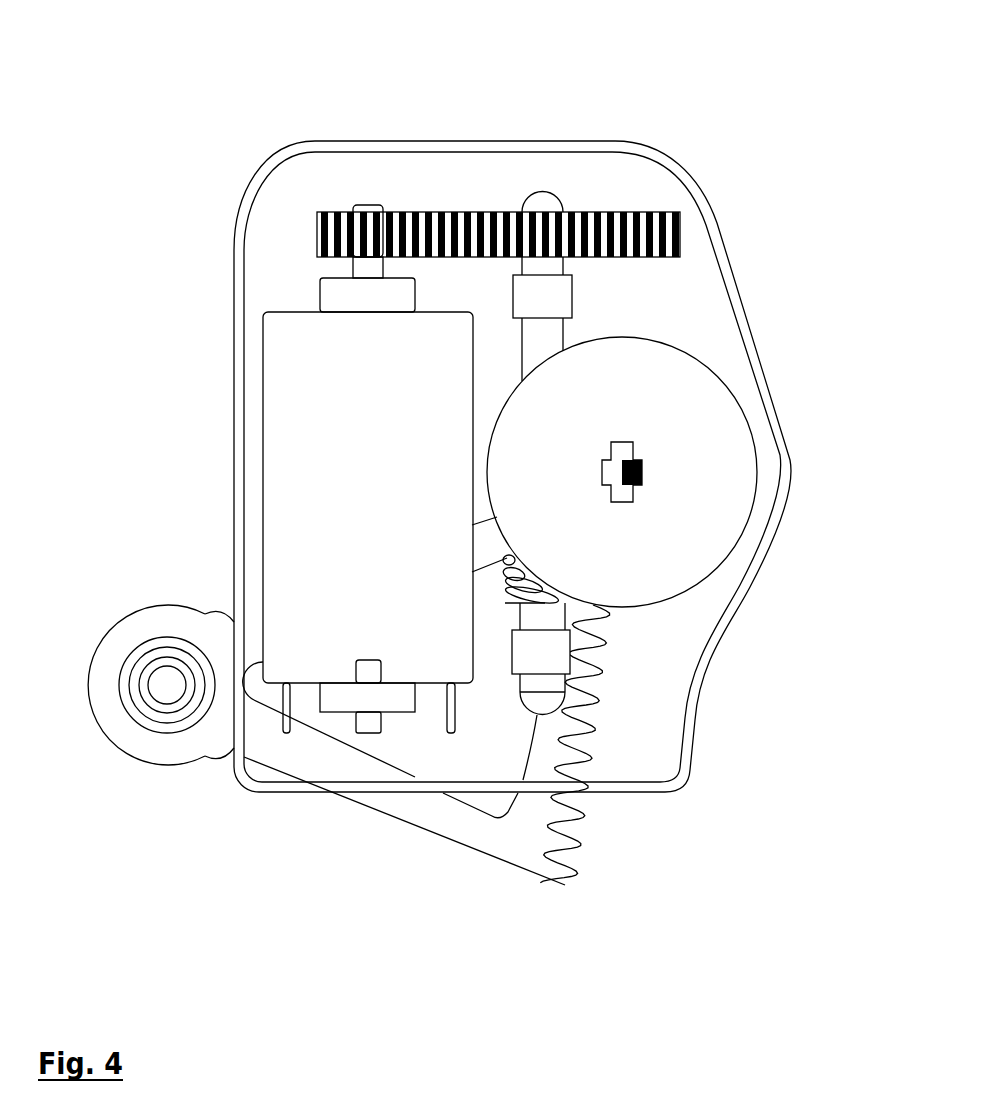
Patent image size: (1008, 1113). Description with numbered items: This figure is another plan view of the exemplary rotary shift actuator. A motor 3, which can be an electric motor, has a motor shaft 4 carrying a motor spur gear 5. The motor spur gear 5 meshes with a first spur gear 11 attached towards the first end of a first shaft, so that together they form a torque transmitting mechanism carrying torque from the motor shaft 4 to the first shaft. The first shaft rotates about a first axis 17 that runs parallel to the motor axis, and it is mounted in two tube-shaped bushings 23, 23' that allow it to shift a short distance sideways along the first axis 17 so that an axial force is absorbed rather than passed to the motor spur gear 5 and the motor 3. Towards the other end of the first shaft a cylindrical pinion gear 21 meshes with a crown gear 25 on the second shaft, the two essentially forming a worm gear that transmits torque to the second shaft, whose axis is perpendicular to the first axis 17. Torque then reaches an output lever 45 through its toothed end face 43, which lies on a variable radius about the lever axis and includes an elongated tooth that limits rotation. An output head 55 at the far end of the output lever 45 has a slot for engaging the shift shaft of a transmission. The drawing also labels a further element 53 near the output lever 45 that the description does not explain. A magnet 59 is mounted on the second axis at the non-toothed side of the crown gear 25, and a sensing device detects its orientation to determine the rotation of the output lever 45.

The motor 3 is at (375, 454).
The motor shaft 4 is at (368, 268).
The motor spur gear 5 is at (502, 151).
The first spur gear 11 is at (622, 210).
The first axis 17 is at (669, 447).
The cylindrical pinion gear 21 is at (565, 600).
The tubular bushing 23 is at (542, 287).
The tubular bushing 23' is at (541, 691).
The crown gear 25 is at (710, 490).
The toothed end face 43 is at (577, 813).
The output lever 45 is at (472, 827).
The rod 53 is at (562, 883).
The output head 55 is at (160, 717).
The magnet 59 is at (640, 462).